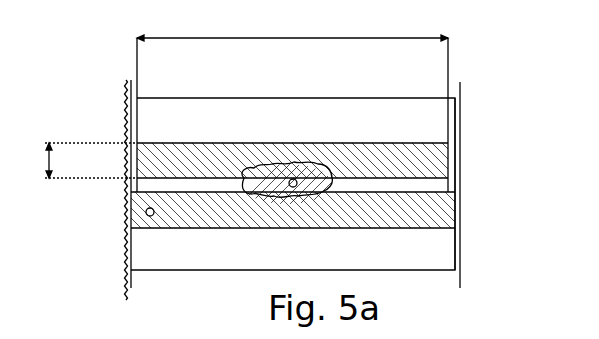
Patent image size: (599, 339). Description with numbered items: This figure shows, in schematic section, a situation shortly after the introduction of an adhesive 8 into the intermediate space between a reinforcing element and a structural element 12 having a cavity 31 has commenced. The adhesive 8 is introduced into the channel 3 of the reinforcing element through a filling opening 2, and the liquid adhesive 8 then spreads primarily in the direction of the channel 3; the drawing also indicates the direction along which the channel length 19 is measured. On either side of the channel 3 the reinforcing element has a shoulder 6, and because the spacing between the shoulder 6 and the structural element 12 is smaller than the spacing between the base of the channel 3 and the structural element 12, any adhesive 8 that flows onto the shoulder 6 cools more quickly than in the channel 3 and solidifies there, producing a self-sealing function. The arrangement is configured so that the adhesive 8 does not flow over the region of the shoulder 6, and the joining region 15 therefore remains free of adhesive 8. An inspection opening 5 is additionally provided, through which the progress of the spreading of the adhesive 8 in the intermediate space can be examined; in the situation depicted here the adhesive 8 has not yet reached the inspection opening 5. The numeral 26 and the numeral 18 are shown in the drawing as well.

The filling opening 2 is at (292, 170).
The channel 3 is at (214, 185).
The inspection opening 5 is at (146, 214).
The shoulder 6 is at (380, 158).
The adhesive 8 is at (268, 168).
The structural element 12 is at (463, 102).
The joining region 15 is at (293, 184).
The carrier 18 is at (462, 131).
The channel length 19 is at (292, 106).
The thickness 26 is at (91, 160).
The cavity 31 is at (420, 243).